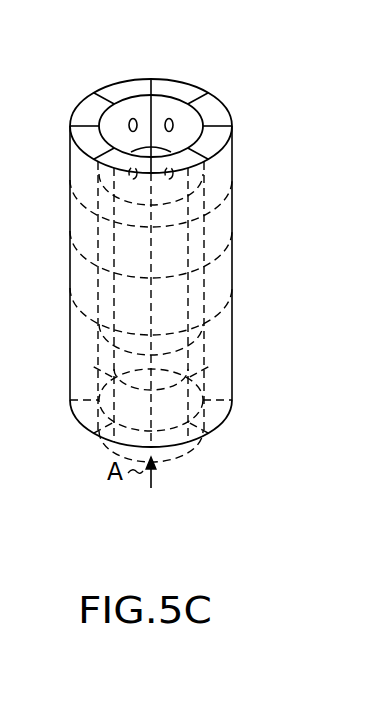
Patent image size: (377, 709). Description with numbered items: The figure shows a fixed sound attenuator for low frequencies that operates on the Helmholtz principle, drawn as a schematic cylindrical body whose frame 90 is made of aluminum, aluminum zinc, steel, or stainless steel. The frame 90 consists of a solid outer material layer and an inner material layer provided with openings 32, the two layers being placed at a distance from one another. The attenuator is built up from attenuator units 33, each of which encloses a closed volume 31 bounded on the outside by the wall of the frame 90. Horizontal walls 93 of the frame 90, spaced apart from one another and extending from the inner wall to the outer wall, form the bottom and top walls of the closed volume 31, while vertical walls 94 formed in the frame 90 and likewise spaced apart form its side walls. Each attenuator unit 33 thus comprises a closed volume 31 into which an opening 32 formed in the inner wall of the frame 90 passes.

The frame 90 is at (92, 137).
The horizontal walls 93 is at (90, 108).
The attenuator unit 33 is at (132, 88).
The closed volume 31 is at (122, 110).
The opening 32 is at (172, 122).
The vertical walls 94 is at (200, 432).